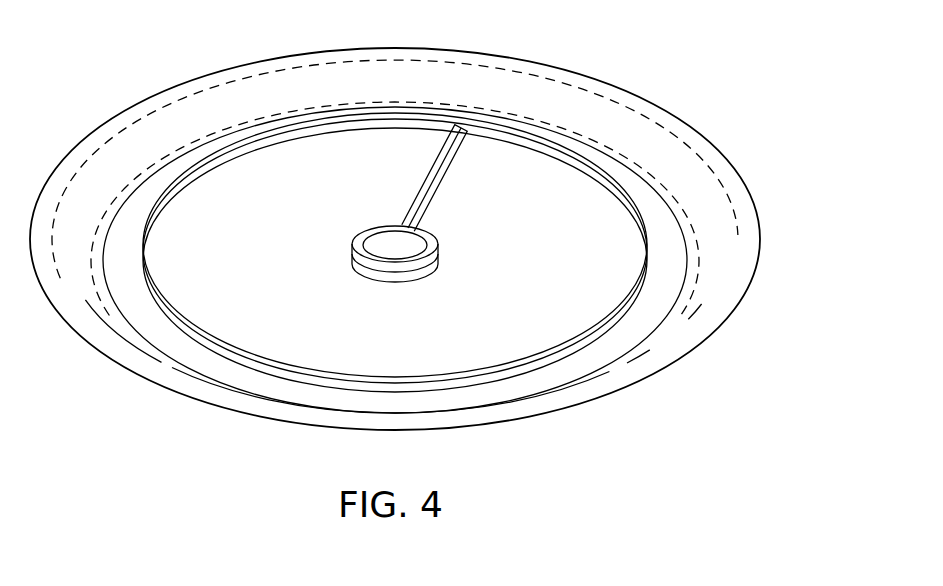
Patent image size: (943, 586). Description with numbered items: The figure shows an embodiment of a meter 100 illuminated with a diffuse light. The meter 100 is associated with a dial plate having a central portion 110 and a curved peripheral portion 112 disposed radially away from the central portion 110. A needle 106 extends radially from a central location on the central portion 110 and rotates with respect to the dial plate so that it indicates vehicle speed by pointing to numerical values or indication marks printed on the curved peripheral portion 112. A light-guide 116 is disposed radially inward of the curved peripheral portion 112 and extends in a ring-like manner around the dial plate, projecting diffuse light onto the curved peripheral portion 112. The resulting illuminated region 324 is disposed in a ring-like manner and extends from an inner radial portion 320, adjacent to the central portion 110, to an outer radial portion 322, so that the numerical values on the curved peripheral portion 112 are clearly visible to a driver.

The meter 100 is at (718, 82).
The needle 106 is at (442, 182).
The central portion 110 is at (416, 345).
The curved peripheral portion 112 is at (210, 393).
The light-guide 116 is at (613, 320).
The inner radial portion 320 is at (700, 244).
The outer radial portion 322 is at (740, 235).
The illuminated region 324 is at (603, 115).